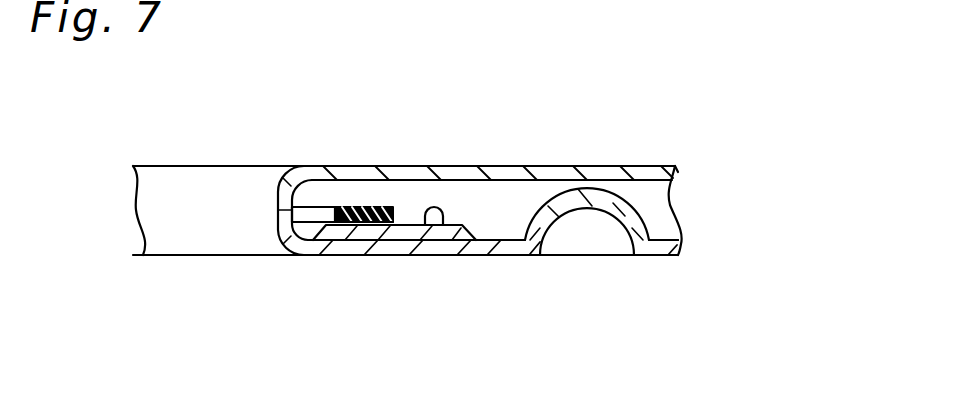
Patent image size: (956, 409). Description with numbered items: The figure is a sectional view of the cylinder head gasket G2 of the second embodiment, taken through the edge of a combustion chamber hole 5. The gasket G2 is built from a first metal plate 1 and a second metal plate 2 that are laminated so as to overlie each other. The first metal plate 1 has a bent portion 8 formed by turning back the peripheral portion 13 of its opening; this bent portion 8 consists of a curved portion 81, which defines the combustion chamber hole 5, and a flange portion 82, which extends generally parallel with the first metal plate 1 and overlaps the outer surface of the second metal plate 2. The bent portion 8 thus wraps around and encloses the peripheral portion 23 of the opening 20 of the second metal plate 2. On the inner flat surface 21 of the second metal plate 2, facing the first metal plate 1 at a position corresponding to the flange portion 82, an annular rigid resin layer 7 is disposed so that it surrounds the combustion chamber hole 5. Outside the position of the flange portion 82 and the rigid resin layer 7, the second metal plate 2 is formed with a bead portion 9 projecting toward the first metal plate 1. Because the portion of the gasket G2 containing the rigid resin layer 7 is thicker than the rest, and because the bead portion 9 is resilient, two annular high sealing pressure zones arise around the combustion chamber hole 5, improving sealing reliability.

The first metal plate 1 is at (630, 176).
The second metal plate 2 is at (663, 247).
The combustion chamber hole 5 is at (220, 187).
The annular rigid resin layer 7 is at (376, 207).
The bent portion 8 is at (491, 316).
The peripheral portion 13 is at (338, 264).
The bead portion 9 is at (594, 197).
The opening 20 is at (306, 229).
The inner flat surface 21 is at (437, 212).
The peripheral portion 23 is at (343, 232).
The curved portion 81 is at (283, 214).
The flange portion 82 is at (397, 241).
The gasket G2 is at (676, 154).